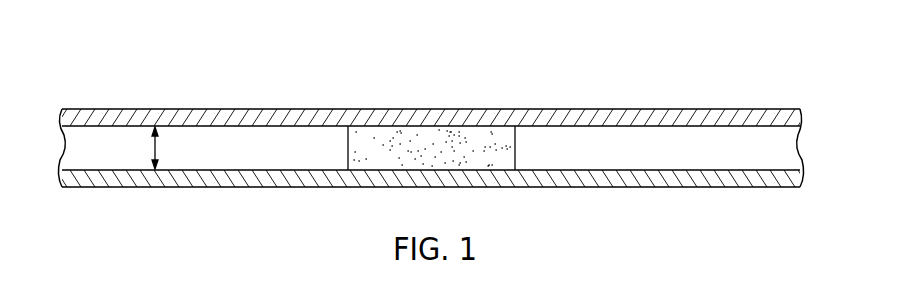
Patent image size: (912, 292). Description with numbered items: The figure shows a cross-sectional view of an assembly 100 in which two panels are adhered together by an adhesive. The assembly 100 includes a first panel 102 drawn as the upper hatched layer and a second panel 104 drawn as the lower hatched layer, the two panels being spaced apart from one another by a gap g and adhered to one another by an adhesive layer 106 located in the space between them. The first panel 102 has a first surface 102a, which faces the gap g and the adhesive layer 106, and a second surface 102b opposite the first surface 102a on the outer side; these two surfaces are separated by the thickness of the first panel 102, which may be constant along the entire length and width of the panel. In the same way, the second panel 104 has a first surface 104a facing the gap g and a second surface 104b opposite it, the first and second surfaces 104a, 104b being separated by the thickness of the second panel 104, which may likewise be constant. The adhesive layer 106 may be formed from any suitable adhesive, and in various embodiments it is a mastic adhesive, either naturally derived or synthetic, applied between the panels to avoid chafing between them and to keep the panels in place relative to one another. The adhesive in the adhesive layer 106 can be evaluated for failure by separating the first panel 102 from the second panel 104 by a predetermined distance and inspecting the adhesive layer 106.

The assembly 100 is at (122, 92).
The first panel 102 is at (805, 110).
The first surface 102a is at (582, 127).
The second surface 102b is at (655, 109).
The second panel 104 is at (805, 187).
The first surface 104a is at (582, 169).
The second surface 104b is at (655, 187).
The adhesive layer 106 is at (348, 147).
The gap g is at (163, 149).